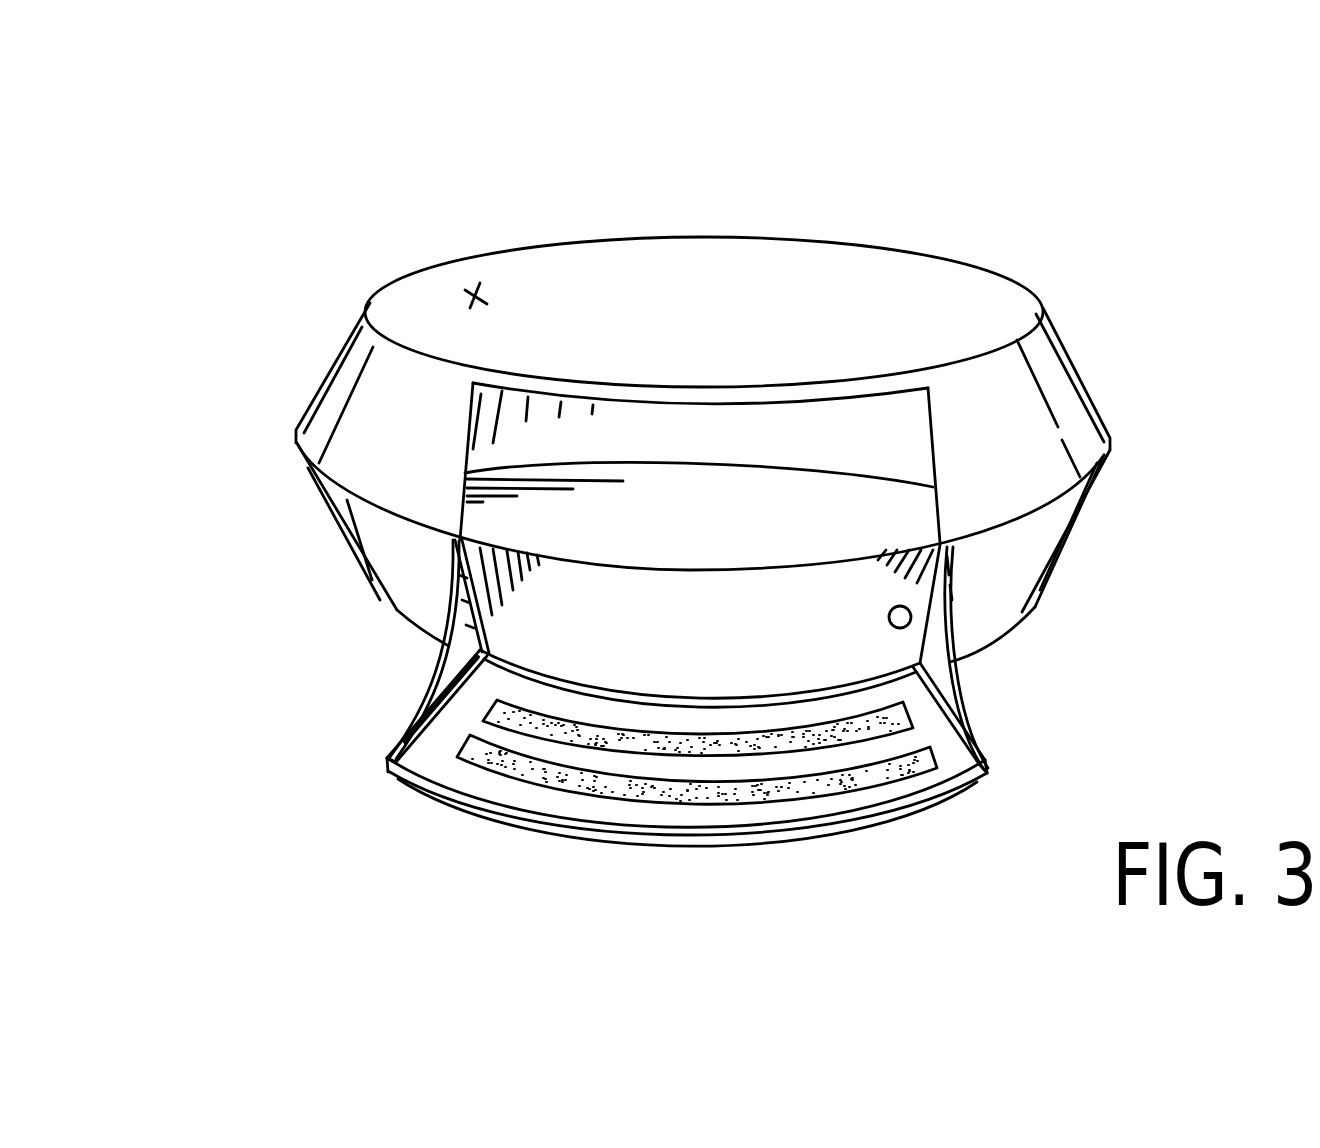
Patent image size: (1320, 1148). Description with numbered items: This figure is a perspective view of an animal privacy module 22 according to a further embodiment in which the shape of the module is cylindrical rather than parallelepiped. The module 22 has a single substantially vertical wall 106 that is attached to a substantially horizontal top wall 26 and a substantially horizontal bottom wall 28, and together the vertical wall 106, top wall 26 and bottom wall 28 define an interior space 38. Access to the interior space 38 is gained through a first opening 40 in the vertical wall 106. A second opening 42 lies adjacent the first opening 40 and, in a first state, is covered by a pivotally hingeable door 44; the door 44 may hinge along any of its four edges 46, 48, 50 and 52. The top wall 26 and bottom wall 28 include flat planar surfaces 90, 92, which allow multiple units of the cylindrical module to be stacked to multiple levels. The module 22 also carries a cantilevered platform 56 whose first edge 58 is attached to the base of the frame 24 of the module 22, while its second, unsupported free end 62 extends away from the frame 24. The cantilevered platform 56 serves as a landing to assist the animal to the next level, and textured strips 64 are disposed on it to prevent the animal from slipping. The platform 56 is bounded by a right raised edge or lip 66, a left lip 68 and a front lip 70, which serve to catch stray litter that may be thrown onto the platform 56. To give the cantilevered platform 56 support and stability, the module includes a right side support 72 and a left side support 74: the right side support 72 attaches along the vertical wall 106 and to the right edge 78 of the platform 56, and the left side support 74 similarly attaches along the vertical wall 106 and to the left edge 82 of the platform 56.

The animal privacy module 22 is at (998, 211).
The frame 24 is at (293, 443).
The top wall 26 is at (980, 288).
The bottom wall 28 is at (690, 510).
The interior space 38 is at (580, 453).
The first opening 40 is at (645, 409).
The second opening 42 is at (936, 543).
The pivotally hingeable door 44 is at (787, 652).
The door edge 46 is at (606, 569).
The door edge 48 is at (697, 688).
The door edge 50 is at (925, 589).
The door edge 52 is at (503, 718).
The cantilevered platform 56 is at (548, 805).
The first edge 58 is at (757, 694).
The free end 62 is at (658, 841).
The textured strips 64 is at (697, 737).
The right lip 66 is at (985, 755).
The left lip 68 is at (383, 749).
The front lip 70 is at (705, 790).
The right side support 72 is at (940, 680).
The left side support 74 is at (447, 660).
The right edge 78 is at (974, 738).
The left edge 82 is at (390, 728).
The flat planar surface 90 is at (478, 295).
The flat planar surface 92 is at (391, 609).
The vertical wall 106 is at (1028, 390).